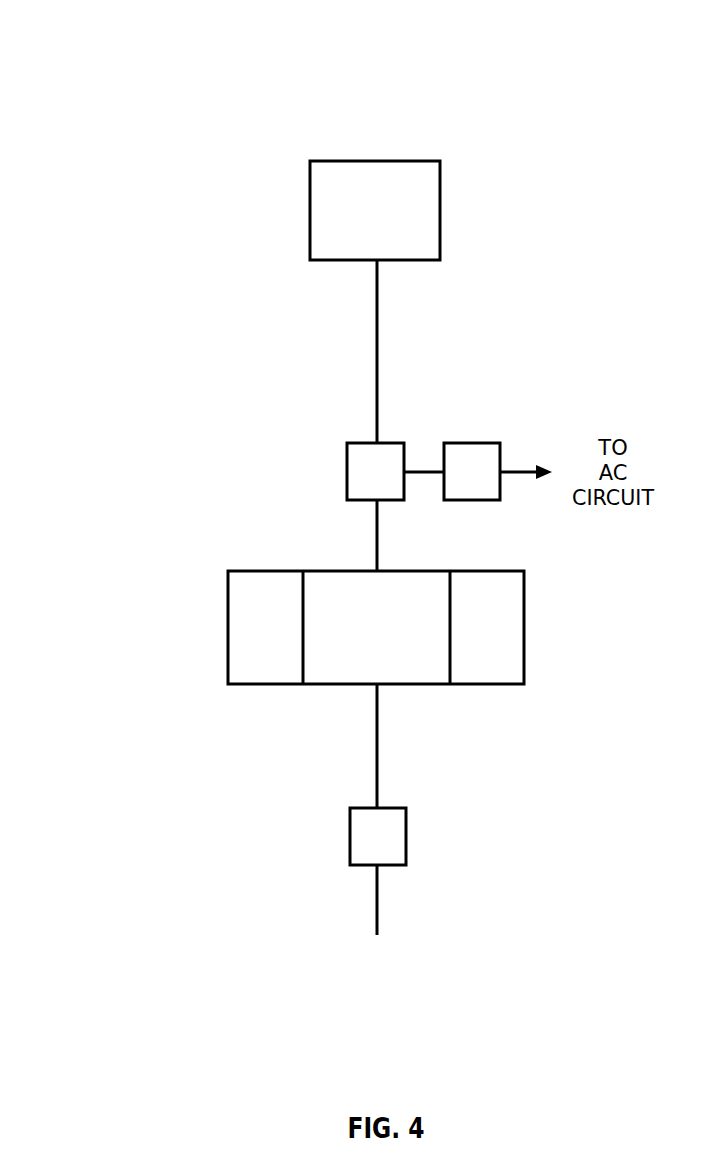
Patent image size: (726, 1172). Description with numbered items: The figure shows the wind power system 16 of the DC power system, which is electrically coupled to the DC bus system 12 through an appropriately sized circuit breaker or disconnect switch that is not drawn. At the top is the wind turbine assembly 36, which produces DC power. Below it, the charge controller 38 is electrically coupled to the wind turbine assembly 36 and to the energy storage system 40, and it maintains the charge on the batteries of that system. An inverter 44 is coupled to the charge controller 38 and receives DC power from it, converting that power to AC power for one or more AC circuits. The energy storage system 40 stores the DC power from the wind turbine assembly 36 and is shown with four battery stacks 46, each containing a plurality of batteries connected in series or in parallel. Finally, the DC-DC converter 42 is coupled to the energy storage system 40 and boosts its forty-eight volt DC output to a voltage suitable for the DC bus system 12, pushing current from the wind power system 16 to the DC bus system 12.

The wind power system 16 is at (572, 60).
The wind turbine assembly 36 is at (398, 161).
The charge controller 38 is at (346, 470).
The inverter 44 is at (474, 443).
The energy storage system 40 is at (326, 646).
The battery stacks 46 is at (500, 685).
The DC-DC converter 42 is at (406, 822).
The DC bus system 12 is at (379, 986).